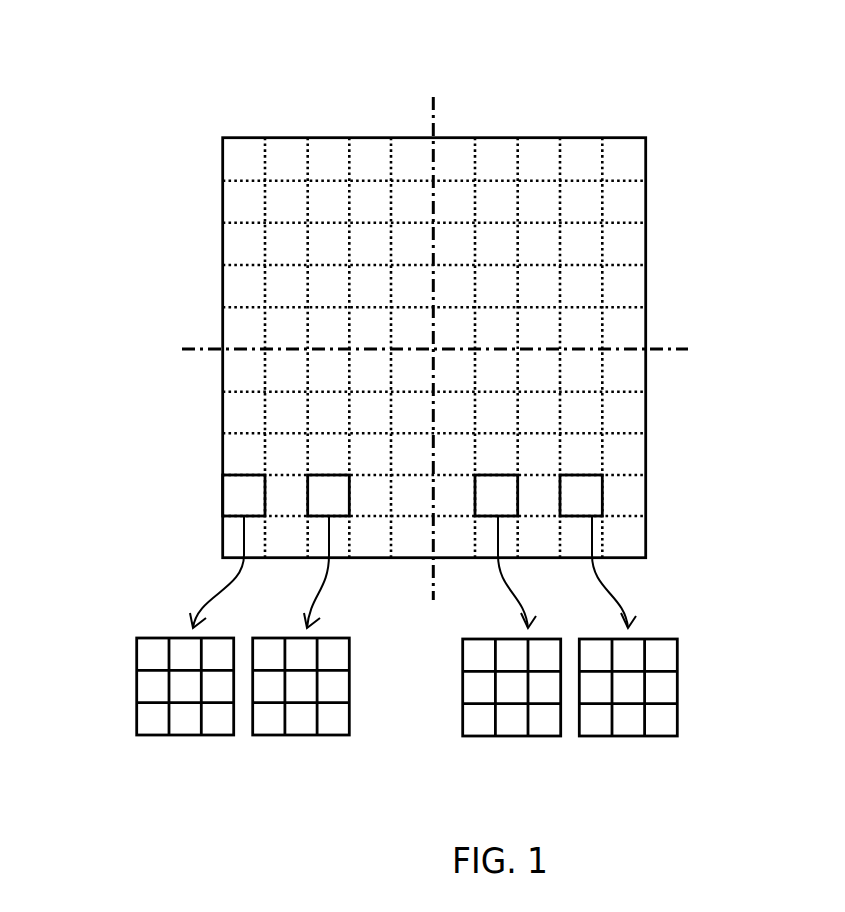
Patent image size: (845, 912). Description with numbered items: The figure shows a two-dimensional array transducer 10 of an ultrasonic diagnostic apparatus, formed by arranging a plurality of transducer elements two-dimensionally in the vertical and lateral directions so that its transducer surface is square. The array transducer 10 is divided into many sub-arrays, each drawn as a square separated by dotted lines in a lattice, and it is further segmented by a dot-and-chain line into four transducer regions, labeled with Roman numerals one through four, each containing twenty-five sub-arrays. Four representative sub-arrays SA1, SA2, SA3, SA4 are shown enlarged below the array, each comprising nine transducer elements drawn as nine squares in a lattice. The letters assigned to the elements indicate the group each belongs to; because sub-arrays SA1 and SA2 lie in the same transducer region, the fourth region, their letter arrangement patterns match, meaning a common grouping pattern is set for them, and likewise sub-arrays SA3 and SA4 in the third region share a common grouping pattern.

The 2D array transducer 10 is at (518, 97).
The sub-array SA1 is at (633, 752).
The sub-array SA2 is at (517, 752).
The sub-array SA3 is at (295, 750).
The sub-array SA4 is at (180, 750).